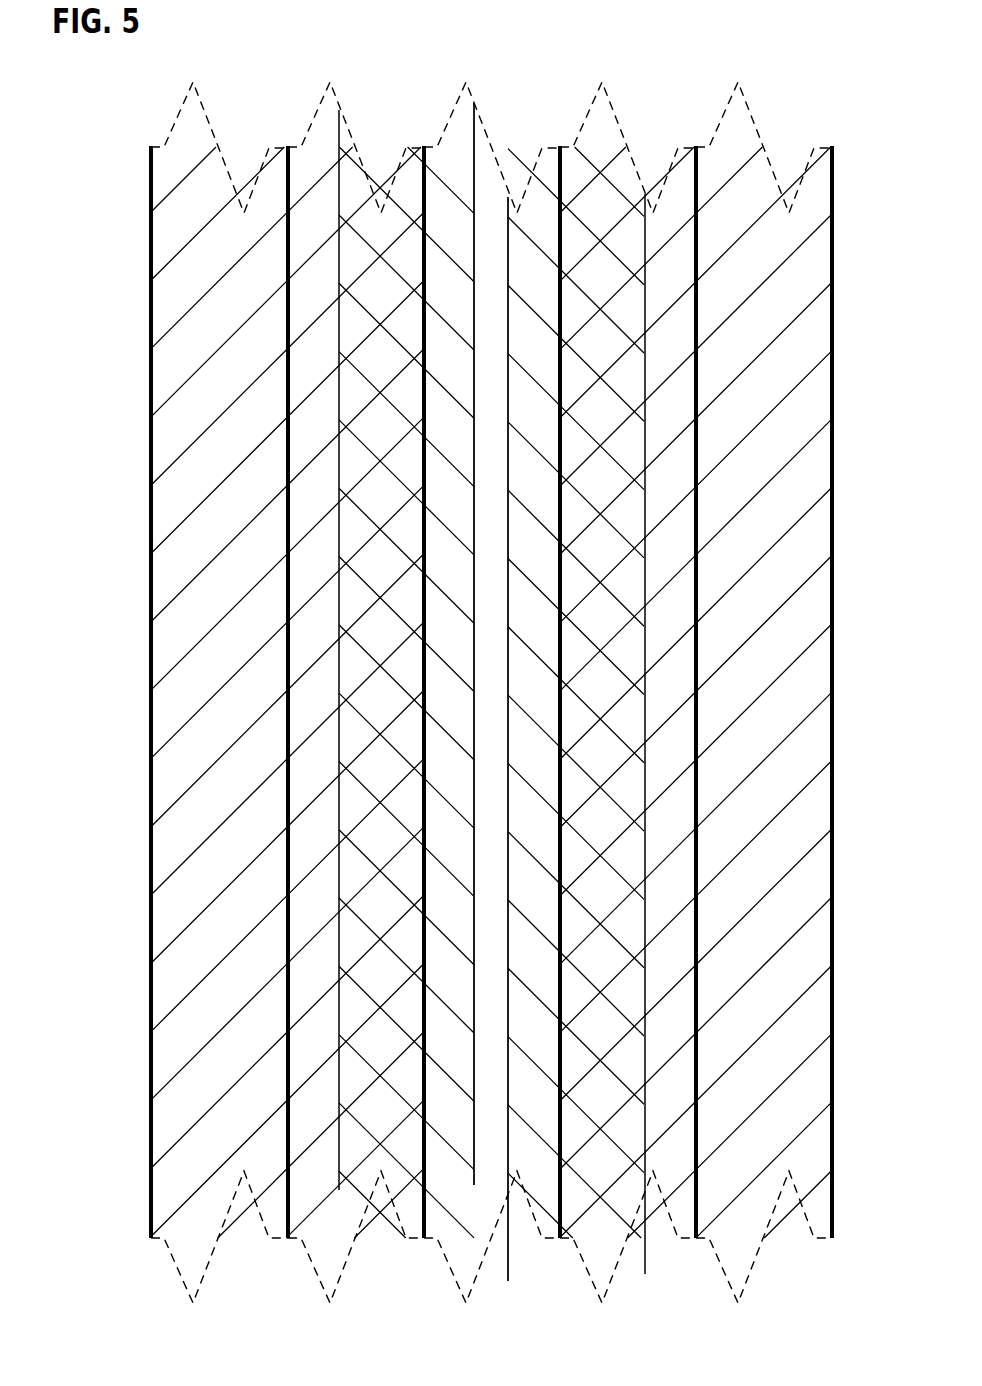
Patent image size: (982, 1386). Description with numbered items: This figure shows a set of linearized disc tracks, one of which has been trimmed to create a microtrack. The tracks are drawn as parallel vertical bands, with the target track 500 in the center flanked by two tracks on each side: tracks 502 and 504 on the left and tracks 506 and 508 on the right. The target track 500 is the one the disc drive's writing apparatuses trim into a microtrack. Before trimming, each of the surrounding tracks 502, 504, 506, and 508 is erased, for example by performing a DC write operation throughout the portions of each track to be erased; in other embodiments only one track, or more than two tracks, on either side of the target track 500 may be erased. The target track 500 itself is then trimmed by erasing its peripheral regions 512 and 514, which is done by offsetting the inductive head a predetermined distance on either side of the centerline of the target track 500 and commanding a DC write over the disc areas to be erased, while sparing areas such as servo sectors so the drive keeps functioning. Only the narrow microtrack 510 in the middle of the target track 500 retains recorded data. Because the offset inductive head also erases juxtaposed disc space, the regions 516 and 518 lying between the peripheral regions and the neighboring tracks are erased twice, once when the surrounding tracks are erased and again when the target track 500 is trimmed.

The target track 500 is at (508, 418).
The track 502 is at (397, 368).
The track 504 is at (235, 464).
The track 506 is at (684, 426).
The track 508 is at (770, 476).
The microtrack 510 is at (490, 1210).
The peripheral region 512 is at (460, 143).
The peripheral region 514 is at (543, 162).
The region 516 is at (407, 192).
The region 518 is at (600, 136).